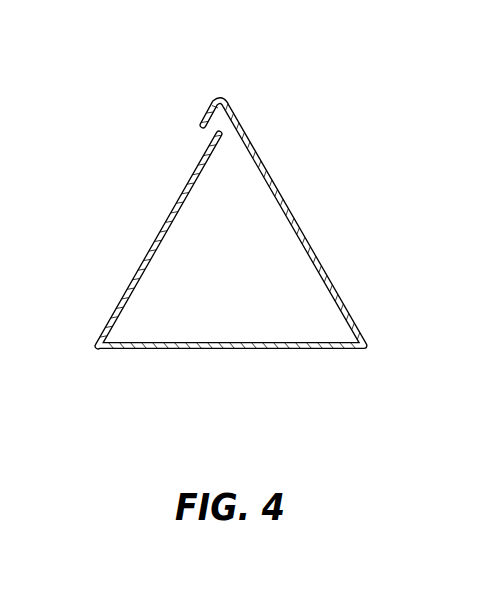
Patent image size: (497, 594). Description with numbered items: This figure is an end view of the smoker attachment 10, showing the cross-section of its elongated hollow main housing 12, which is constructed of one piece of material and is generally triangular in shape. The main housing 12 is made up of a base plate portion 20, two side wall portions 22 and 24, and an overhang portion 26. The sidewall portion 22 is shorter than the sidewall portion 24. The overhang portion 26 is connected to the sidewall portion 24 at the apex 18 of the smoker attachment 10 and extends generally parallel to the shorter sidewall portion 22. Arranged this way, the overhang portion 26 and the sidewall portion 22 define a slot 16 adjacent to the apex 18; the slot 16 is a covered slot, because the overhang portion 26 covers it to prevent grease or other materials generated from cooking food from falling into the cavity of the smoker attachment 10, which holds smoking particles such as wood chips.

The smoker attachment 10 is at (347, 62).
The main housing 12 is at (268, 158).
The slot 16 is at (208, 133).
The apex 18 is at (224, 96).
The base plate portion 20 is at (230, 350).
The sidewall portion 22 is at (130, 278).
The sidewall portion 24 is at (338, 280).
The overhang portion 26 is at (199, 104).